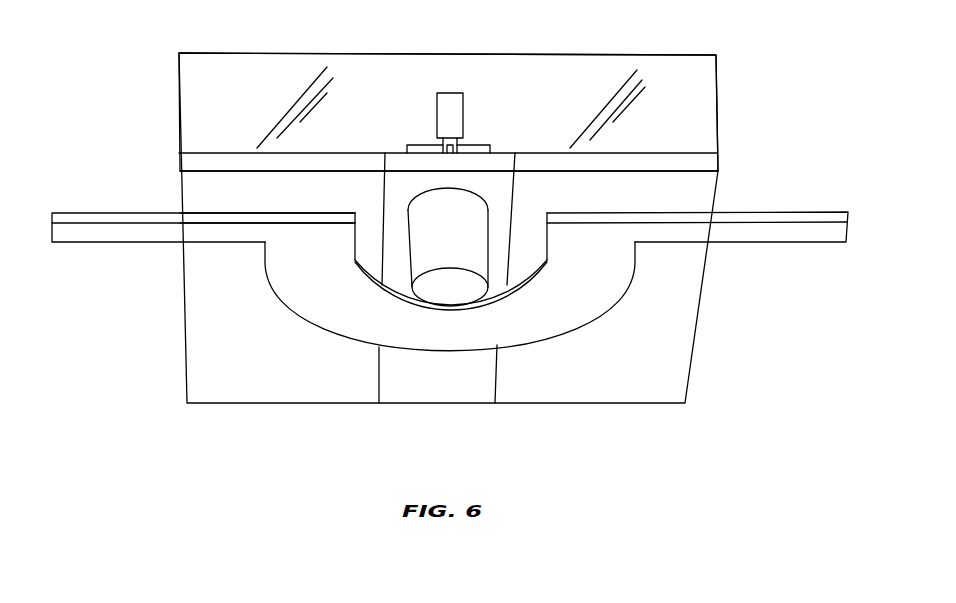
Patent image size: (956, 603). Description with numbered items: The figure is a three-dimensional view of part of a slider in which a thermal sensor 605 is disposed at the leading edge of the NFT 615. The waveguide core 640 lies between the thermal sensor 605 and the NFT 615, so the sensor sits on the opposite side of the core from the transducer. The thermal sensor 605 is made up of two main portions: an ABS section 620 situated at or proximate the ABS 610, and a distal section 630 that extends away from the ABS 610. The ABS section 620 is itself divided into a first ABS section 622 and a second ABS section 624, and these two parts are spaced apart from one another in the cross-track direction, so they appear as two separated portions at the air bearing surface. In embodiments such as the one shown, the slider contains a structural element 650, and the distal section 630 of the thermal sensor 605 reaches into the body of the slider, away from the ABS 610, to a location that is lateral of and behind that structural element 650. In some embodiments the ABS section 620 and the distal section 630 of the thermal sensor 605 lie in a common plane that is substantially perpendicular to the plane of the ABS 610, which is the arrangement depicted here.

The thermal sensor 605 is at (281, 322).
The ABS 610 is at (252, 67).
The NFT 615 is at (443, 150).
The ABS section 620 is at (108, 217).
The first ABS section 622 is at (655, 230).
The second ABS section 624 is at (247, 227).
The distal section 630 is at (450, 337).
The waveguide core 640 is at (392, 180).
The structural element 650 is at (472, 220).